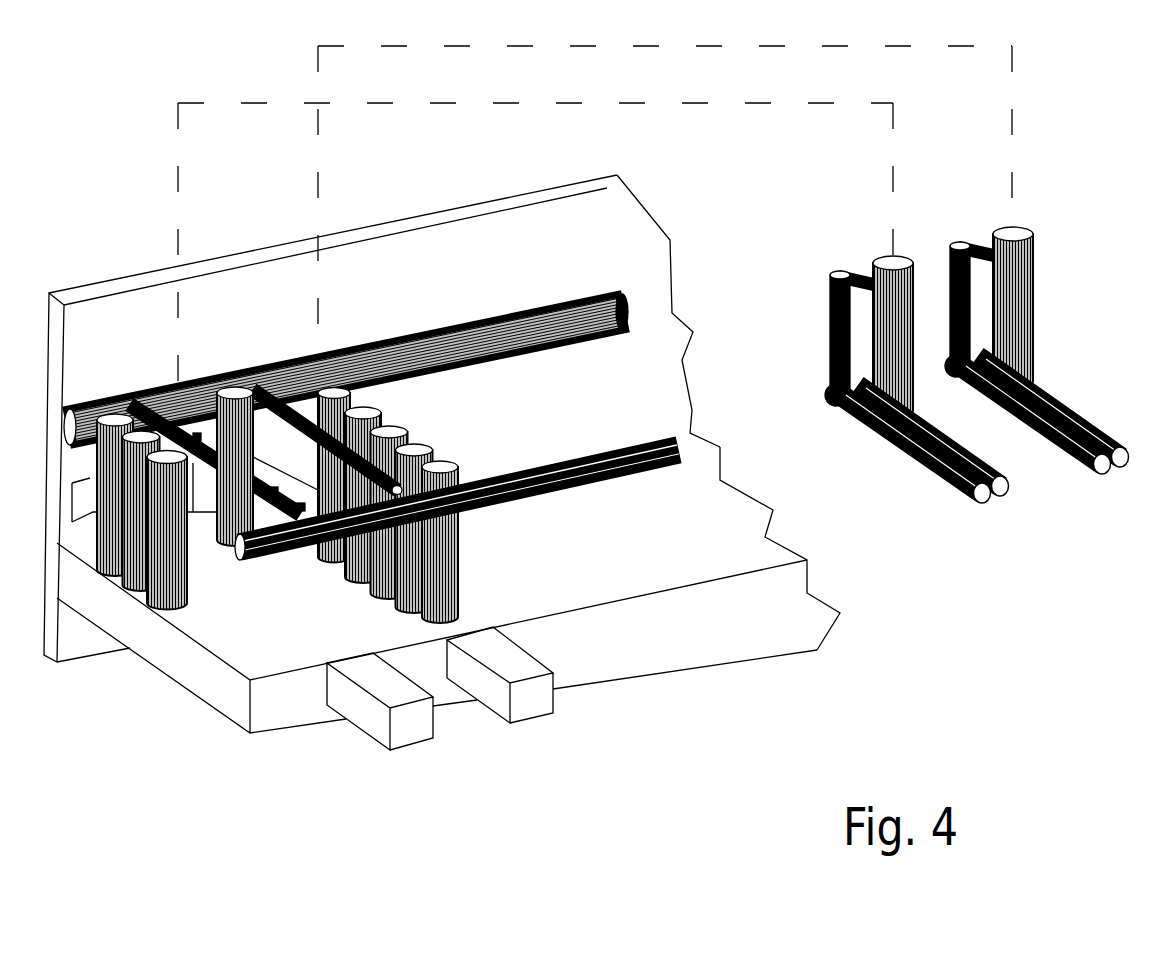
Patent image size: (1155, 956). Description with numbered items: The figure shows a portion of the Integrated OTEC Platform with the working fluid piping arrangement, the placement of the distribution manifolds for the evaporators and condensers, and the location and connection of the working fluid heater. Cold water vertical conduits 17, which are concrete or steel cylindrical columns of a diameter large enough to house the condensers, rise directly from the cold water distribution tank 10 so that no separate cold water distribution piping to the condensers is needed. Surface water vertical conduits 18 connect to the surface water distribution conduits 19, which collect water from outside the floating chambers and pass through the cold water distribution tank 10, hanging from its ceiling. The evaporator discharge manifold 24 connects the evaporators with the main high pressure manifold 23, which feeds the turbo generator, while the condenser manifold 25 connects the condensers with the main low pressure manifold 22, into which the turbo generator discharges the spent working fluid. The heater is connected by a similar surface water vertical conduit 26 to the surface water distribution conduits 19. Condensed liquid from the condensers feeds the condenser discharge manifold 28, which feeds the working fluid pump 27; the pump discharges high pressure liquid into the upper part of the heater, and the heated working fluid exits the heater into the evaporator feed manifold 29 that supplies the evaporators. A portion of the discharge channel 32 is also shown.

The cold water distribution tank 10 is at (612, 545).
The cold water vertical conduits 17 is at (173, 610).
The surface water vertical conduits 18 is at (457, 573).
The surface water distribution conduits 19 is at (533, 690).
The main low pressure manifold 22 is at (627, 312).
The main high pressure manifold 23 is at (780, 548).
The evaporator discharge manifold 24 is at (230, 547).
The condenser manifold 25 is at (333, 405).
The surface water vertical conduit 26 is at (1068, 262).
The working fluid pump 27 is at (830, 395).
The condenser discharge manifold 28 is at (928, 468).
The evaporator feed manifold 29 is at (998, 497).
The discharge channel 32 is at (640, 250).